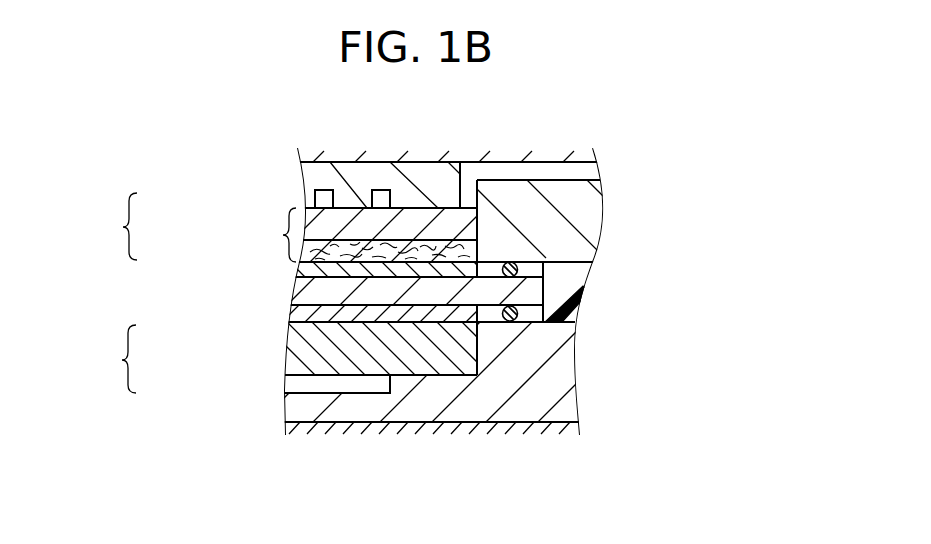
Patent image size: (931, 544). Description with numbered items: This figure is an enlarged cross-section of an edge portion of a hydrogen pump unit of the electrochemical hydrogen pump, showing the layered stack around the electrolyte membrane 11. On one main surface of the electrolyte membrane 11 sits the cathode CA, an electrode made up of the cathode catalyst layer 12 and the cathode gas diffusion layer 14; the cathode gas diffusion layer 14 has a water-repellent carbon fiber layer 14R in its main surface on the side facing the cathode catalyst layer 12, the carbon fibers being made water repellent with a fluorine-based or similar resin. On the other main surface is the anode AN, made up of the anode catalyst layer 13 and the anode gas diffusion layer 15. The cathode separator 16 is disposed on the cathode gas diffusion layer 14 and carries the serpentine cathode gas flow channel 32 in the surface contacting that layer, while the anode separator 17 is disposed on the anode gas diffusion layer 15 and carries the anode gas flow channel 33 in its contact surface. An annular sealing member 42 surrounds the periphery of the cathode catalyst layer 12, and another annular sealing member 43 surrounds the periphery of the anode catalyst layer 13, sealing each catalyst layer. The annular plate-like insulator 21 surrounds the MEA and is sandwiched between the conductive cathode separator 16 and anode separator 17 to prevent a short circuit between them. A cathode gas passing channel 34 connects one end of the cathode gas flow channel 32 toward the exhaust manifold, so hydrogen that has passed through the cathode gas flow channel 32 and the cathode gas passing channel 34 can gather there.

The electrolyte membrane 11 is at (317, 288).
The cathode catalyst layer 12 is at (312, 273).
The anode catalyst layer 13 is at (300, 313).
The cathode gas diffusion layer 14 is at (278, 234).
The carbon fiber layer 14R is at (365, 244).
The anode gas diffusion layer 15 is at (300, 348).
The cathode separator 16 is at (580, 218).
The anode separator 17 is at (560, 373).
The insulator 21 is at (580, 275).
The cathode gas flow channel 32 is at (323, 200).
The anode gas flow channel 33 is at (293, 383).
The cathode gas passing channel 34 is at (580, 172).
The annular sealing member 42 is at (511, 262).
The annular sealing member 43 is at (518, 321).
The cathode CA is at (188, 227).
The anode AN is at (107, 359).